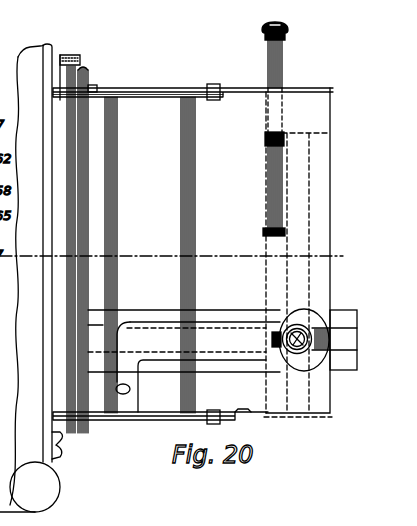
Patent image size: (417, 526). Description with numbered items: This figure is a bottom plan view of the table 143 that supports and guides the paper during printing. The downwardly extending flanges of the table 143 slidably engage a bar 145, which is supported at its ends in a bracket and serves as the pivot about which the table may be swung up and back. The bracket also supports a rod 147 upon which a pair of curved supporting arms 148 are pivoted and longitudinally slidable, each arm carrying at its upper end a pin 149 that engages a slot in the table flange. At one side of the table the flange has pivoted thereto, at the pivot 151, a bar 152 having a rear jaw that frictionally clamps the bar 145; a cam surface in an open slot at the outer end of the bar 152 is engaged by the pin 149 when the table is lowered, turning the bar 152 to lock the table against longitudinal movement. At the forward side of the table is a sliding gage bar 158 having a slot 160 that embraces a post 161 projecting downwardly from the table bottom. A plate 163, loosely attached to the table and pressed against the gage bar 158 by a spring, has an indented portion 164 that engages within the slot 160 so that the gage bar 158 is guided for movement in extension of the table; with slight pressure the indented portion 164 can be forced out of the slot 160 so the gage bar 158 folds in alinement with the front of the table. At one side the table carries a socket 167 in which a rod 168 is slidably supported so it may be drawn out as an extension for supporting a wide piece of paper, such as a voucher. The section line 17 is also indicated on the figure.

The centerline / section line 17 is at (181, 257).
The table 143 is at (221, 206).
The bar 145 is at (81, 56).
The rod 147 is at (86, 432).
The curved supporting arms 148 is at (143, 98).
The pin 149 is at (214, 84).
The pivot 151 is at (93, 86).
The bar 152 is at (157, 96).
The sliding gage bar 158 is at (334, 308).
The slot 160 is at (343, 352).
The post 161 is at (282, 332).
The plate 163 is at (212, 335).
The indented portion 164 is at (271, 339).
The socket 167 is at (285, 112).
The rod 168 is at (284, 60).